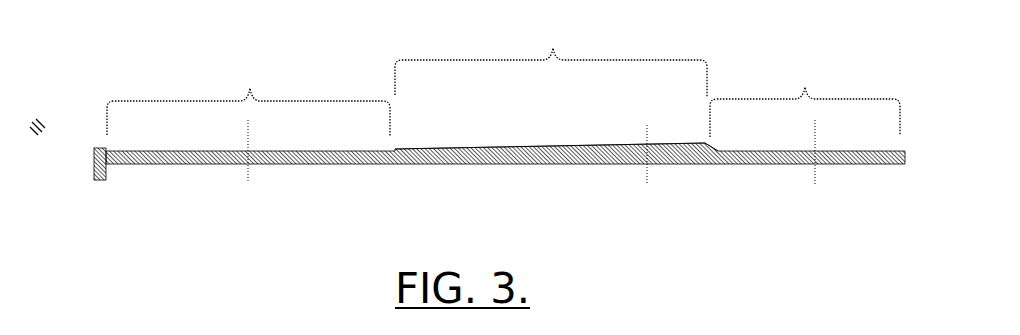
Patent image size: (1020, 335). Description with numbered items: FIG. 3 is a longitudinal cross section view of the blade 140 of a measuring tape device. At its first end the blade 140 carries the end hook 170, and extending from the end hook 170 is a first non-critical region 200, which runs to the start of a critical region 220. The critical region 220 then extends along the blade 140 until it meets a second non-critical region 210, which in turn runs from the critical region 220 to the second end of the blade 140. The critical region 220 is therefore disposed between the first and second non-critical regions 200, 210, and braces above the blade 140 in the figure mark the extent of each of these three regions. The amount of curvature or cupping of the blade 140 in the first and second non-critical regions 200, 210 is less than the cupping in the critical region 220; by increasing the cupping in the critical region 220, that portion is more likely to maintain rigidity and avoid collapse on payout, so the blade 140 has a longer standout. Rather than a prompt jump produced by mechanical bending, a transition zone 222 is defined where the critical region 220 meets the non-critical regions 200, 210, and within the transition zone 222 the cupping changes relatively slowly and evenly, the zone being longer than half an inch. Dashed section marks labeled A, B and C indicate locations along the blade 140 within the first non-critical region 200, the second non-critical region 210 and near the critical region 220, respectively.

The blade 140 is at (548, 175).
The end hook 170 is at (95, 173).
The first non-critical region 200 is at (248, 99).
The critical region 220 is at (551, 82).
The second non-critical region 210 is at (805, 97).
The transition zone 222 is at (710, 160).
The section location A is at (250, 158).
The section location B is at (820, 152).
The section location C is at (647, 152).